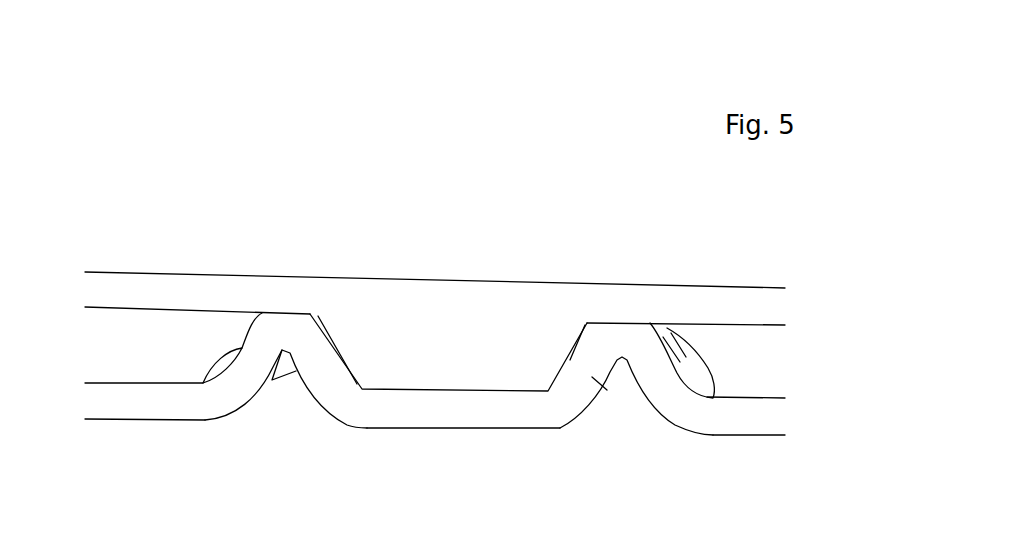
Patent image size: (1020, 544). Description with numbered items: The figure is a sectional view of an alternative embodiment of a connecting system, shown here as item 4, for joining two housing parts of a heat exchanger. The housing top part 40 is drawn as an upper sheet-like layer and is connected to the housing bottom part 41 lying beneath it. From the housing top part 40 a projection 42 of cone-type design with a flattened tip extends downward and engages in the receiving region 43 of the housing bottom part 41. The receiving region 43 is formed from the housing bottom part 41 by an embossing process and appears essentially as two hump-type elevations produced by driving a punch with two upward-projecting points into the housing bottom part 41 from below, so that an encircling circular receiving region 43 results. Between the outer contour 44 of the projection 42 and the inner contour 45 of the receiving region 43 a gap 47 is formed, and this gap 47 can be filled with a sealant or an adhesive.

The layered assembly 4 is at (124, 246).
The housing top part 40 is at (155, 295).
The housing bottom part 41 is at (142, 398).
The projection 42 is at (412, 343).
The receiving region 43 is at (620, 360).
The outer contour 44 is at (333, 372).
The inner contour 45 is at (337, 368).
The gap 47 is at (570, 355).